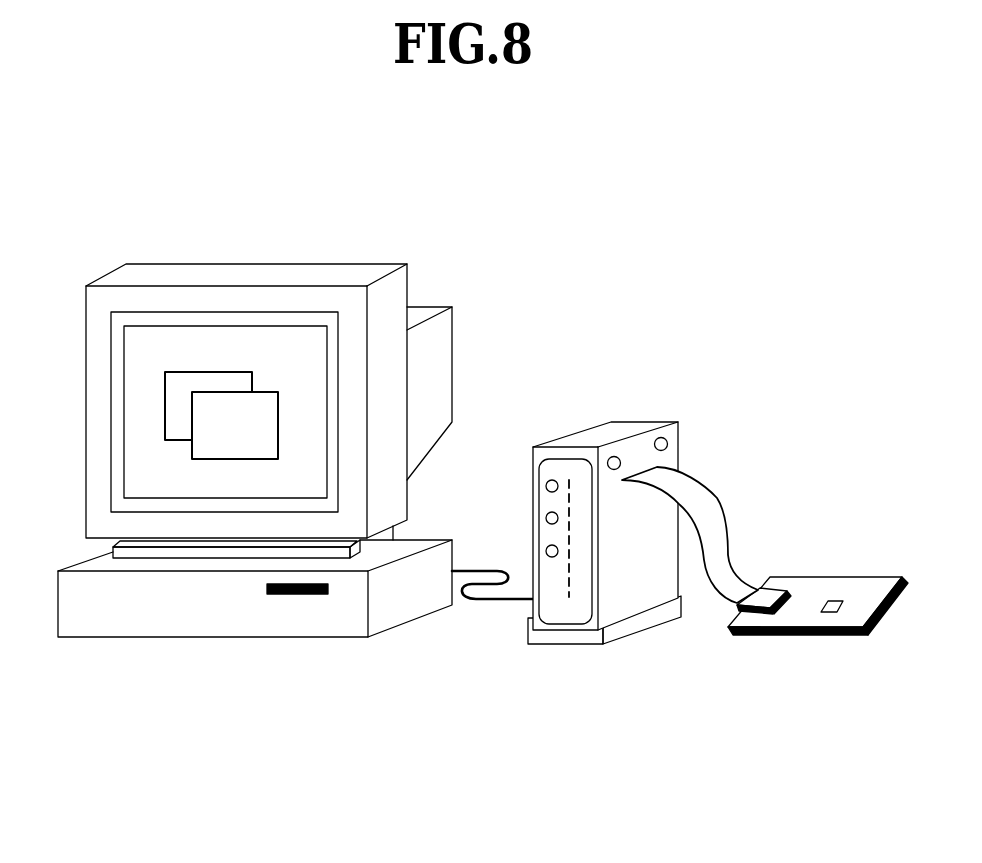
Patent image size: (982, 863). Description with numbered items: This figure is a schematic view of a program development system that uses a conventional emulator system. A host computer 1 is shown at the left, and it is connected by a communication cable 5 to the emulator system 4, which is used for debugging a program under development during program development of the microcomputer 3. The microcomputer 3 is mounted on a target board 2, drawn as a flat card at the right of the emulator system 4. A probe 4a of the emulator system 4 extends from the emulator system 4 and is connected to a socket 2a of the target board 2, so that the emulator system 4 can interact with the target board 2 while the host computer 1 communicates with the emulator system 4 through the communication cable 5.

The host computer 1 is at (290, 293).
The target board 2 is at (833, 633).
The socket 2a is at (743, 627).
The microcomputer 3 is at (833, 600).
The emulator system 4 is at (617, 422).
The probe 4a is at (759, 586).
The communication cable 5 is at (477, 605).